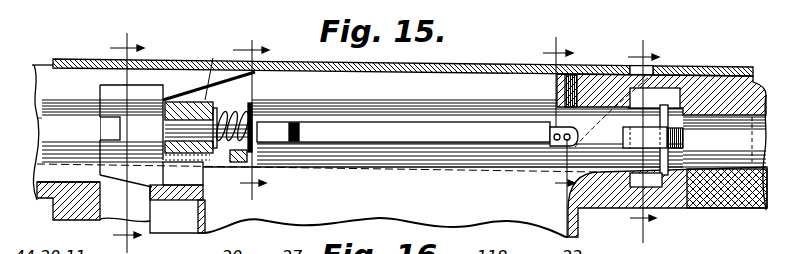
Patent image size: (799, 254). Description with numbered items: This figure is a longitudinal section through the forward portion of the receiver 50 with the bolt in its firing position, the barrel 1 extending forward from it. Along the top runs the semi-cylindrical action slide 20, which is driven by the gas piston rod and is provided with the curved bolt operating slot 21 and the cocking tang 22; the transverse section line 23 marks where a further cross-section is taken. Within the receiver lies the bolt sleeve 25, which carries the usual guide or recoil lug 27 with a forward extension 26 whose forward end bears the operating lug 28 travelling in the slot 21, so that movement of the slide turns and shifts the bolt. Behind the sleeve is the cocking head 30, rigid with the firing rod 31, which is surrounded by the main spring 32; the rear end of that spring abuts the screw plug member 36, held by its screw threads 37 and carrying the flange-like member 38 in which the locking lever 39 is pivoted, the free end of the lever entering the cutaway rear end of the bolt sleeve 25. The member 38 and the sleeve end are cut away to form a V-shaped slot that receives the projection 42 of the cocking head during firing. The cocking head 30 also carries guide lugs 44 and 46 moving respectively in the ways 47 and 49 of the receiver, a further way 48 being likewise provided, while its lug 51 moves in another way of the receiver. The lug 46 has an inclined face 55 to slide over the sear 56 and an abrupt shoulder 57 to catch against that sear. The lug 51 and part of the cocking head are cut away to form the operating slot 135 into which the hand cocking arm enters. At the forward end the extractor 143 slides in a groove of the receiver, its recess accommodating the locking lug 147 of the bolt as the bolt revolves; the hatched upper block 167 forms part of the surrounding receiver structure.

The barrel 1 is at (770, 88).
The semi-cylindrical action slide 20 is at (477, 61).
The curved bolt operating slot 21 is at (688, 56).
The cocking tang 22 is at (173, 77).
The section line 23 is at (127, 135).
The bolt sleeve 25 is at (367, 108).
The forward extension 26 is at (392, 132).
The guide or recoil lug 27 is at (273, 132).
The operating lug 28 is at (548, 137).
The cocking head 30 is at (112, 100).
The firing rod 31 is at (213, 115).
The main spring 32 is at (240, 120).
The screw plug member 36 is at (205, 156).
The screw threads 37 is at (208, 70).
The flange-like member 38 is at (160, 100).
The locking lever 39 is at (187, 100).
The projection 42 is at (205, 164).
The guide lug 44 is at (115, 90).
The guide lug 46 is at (150, 199).
The slot or way 47 is at (43, 72).
The slot or way 48 is at (42, 123).
The slot or way 49 is at (43, 176).
The receiver 50 is at (37, 202).
The lug 51 is at (100, 127).
The inclined face 55 is at (97, 176).
The sear 56 is at (97, 218).
The abrupt shoulder 57 is at (165, 175).
The operating slot 135 is at (140, 150).
The extractor 143 is at (712, 95).
The locking lug 147 is at (653, 180).
The upper block 167 is at (582, 72).